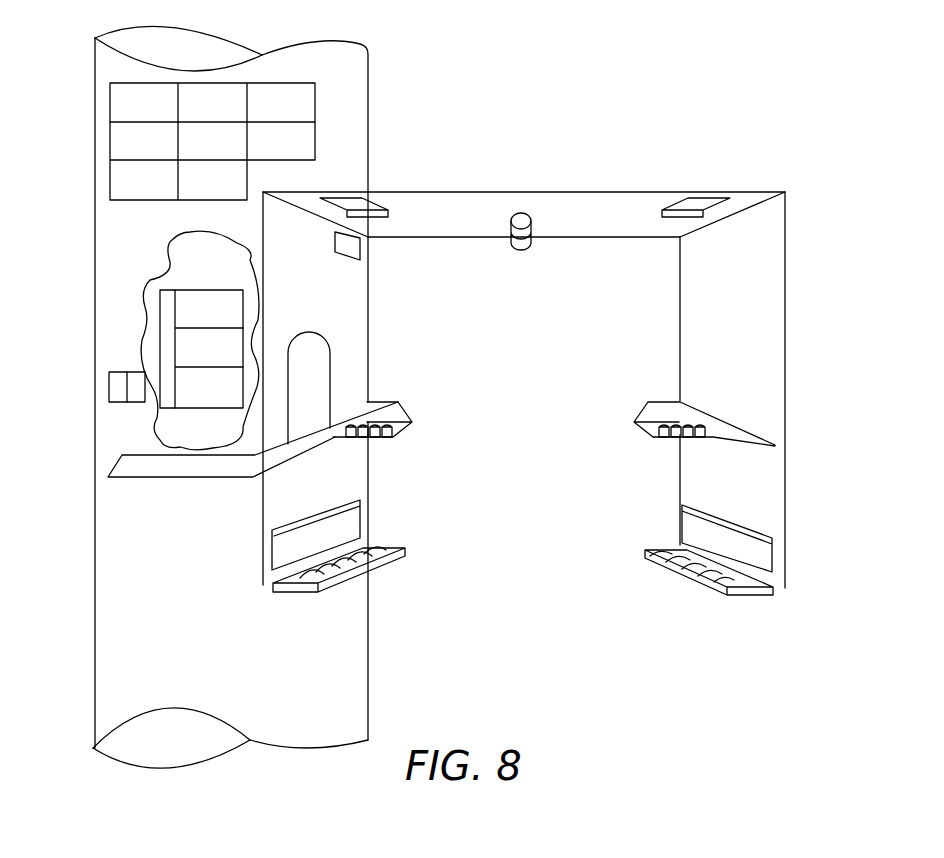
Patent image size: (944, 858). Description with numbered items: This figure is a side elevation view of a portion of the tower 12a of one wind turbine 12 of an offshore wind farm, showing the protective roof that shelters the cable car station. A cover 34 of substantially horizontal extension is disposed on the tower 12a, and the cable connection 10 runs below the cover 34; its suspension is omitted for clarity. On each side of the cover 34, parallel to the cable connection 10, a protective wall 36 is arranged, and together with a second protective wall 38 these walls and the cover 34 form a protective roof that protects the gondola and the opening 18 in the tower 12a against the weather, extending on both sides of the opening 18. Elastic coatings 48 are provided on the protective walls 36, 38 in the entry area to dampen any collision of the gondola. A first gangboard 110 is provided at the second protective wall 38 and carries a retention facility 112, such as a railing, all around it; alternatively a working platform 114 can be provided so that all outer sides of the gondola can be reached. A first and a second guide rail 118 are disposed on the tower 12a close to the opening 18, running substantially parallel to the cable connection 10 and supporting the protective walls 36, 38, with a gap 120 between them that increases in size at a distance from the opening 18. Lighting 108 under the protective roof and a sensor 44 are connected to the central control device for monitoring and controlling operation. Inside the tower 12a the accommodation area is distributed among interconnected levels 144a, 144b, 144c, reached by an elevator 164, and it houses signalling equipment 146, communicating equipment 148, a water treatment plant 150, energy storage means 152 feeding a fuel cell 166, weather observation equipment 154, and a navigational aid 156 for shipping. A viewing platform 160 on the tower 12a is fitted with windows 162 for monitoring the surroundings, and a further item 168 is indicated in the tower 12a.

The cable connection 10 is at (522, 252).
The wind turbine 12 is at (440, 33).
The tower 12a is at (371, 70).
The opening 18 is at (323, 397).
The cover 34 is at (555, 205).
The protective wall 36 is at (770, 283).
The second protective wall 38 is at (357, 293).
The sensor 44 is at (355, 248).
The elastic coating 48 is at (352, 520).
The lighting 108 is at (392, 212).
The first gangboard 110 is at (413, 418).
The retention facility 112 is at (407, 435).
The working platform 114 is at (383, 402).
The guide rail 118 is at (293, 593).
The gap 120 is at (523, 592).
The level of accommodation area 144a is at (233, 321).
The level of accommodation area 144b is at (233, 359).
The level of accommodation area 144c is at (233, 397).
The signalling equipment 146 is at (164, 112).
The communicating equipment 148 is at (164, 150).
The water treatment plant 150 is at (164, 189).
The energy storage means 152 is at (232, 112).
The weather observation equipment 154 is at (232, 150).
The navigational aid 156 is at (232, 189).
The viewing platform 160 is at (150, 478).
The window 162 is at (109, 385).
The elevator 164 is at (163, 310).
The fuel cell 166 is at (301, 150).
The indicator 168 is at (301, 112).